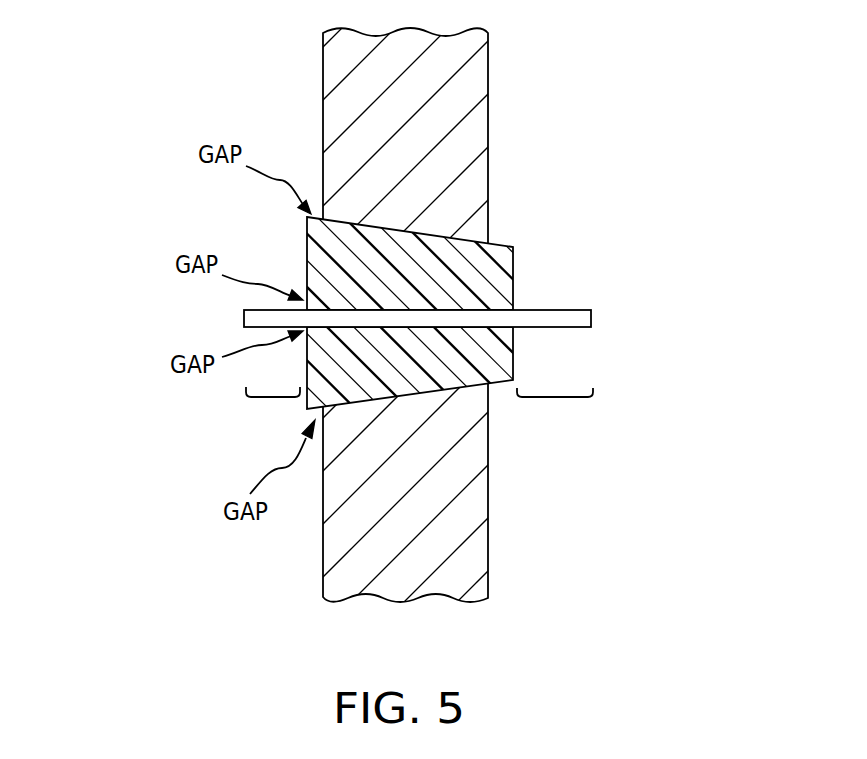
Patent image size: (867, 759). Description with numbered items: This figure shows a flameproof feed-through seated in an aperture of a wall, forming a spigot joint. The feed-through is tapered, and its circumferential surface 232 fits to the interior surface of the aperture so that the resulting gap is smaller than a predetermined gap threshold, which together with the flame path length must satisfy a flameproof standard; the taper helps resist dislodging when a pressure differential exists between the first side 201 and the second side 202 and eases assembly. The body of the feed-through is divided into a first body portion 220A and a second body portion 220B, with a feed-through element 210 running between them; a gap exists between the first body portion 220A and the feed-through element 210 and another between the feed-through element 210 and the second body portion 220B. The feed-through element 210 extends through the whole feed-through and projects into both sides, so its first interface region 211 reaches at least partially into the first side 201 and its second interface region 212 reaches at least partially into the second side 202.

The circumferential surface 232 is at (492, 243).
The first body portion 220A is at (513, 273).
The second body portion 220B is at (513, 350).
The feed-through element 210 is at (591, 316).
The first interface region 211 is at (273, 397).
The second interface region 212 is at (555, 397).
The first side 201 is at (55, 367).
The second side 202 is at (787, 367).